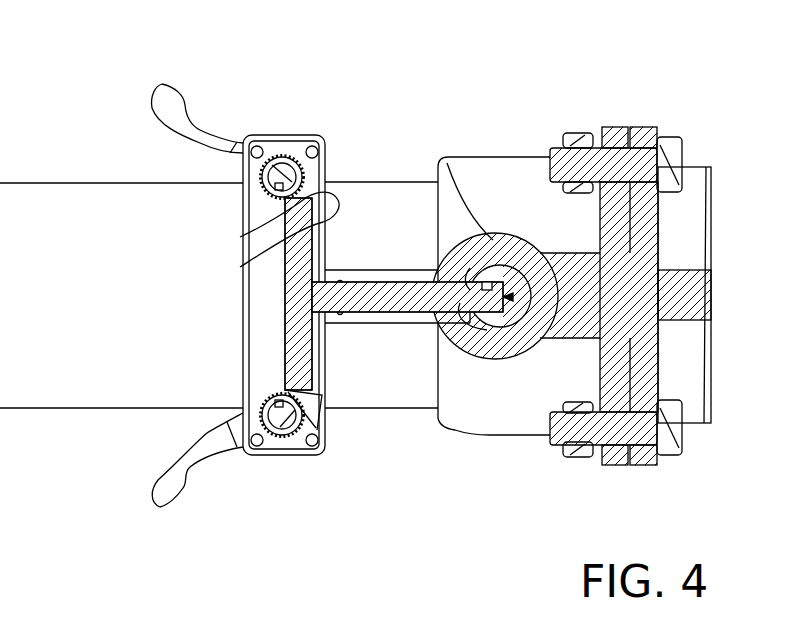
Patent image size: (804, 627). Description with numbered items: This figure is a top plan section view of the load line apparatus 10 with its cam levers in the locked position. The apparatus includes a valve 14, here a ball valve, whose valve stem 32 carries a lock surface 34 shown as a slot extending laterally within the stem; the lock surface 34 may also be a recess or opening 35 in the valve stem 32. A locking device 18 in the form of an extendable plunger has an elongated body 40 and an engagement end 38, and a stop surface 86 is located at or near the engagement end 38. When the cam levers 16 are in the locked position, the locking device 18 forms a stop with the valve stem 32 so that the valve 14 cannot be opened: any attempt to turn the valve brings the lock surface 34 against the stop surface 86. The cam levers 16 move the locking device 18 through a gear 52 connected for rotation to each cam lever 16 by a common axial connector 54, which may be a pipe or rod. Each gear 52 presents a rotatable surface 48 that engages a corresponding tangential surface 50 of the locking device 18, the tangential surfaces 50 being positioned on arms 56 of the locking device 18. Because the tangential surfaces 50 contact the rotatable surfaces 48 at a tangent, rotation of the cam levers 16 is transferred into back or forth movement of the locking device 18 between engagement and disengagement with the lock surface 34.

The load line apparatus 10 is at (635, 105).
The valve 14 is at (446, 160).
The cam lever 16 is at (217, 138).
The locking device 18 is at (373, 323).
The valve stem 32 is at (540, 253).
The lock surface 34 is at (512, 265).
The recess or opening 35 is at (513, 297).
The engagement end 38 is at (503, 283).
The elongated body 40 is at (413, 280).
The rotatable surface 48 is at (272, 138).
The tangential surface 50 is at (287, 237).
The gear 52 is at (297, 190).
The common axial connector 54 is at (260, 407).
The arm 56 is at (240, 237).
The stop surface 86 is at (498, 262).